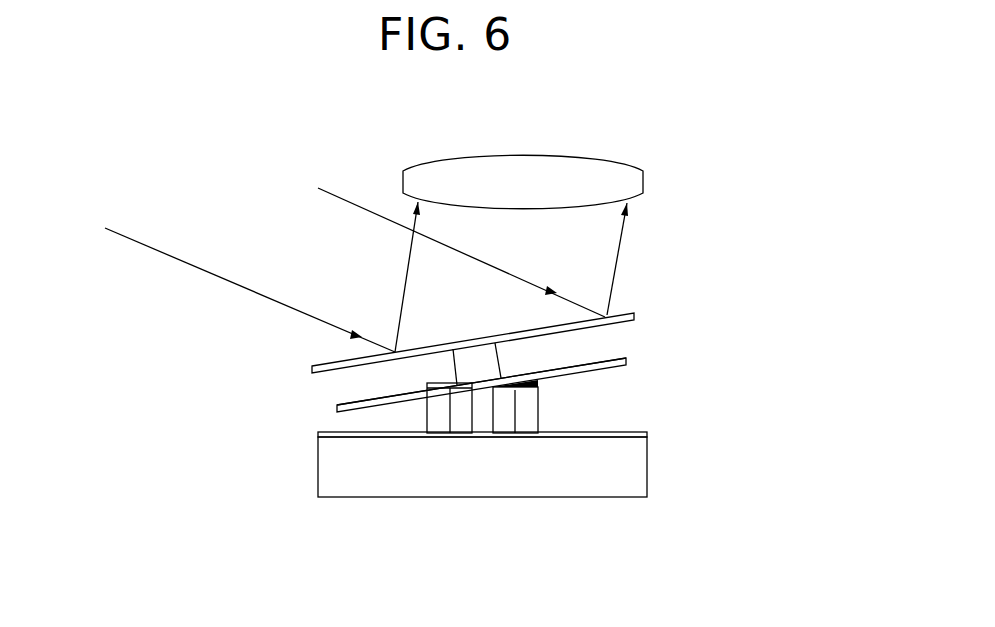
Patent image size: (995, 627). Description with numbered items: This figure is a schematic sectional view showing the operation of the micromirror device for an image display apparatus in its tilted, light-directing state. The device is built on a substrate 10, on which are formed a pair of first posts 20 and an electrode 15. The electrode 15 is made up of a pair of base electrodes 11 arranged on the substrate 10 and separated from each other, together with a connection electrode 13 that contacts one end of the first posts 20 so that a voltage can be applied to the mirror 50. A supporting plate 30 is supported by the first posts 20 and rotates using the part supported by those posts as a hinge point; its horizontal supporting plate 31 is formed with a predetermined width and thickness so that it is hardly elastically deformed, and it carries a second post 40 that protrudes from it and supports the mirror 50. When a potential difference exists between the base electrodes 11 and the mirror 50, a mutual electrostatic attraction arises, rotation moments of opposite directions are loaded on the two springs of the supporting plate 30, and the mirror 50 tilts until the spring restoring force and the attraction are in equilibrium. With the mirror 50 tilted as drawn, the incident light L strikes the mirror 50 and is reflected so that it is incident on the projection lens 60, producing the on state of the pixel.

The light beam L is at (202, 270).
The projection lens 60 is at (643, 172).
The mirror 50 is at (312, 367).
The second post 40 is at (482, 358).
The horizontal supporting plate 31 is at (608, 357).
The supporting plate 30 is at (318, 410).
The first posts 20 is at (520, 412).
The electrode 15 is at (520, 498).
The connection electrode 13 is at (450, 437).
The base electrodes 11 is at (646, 434).
The substrate 10 is at (605, 487).